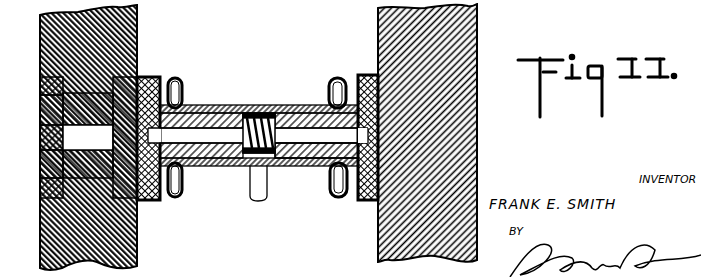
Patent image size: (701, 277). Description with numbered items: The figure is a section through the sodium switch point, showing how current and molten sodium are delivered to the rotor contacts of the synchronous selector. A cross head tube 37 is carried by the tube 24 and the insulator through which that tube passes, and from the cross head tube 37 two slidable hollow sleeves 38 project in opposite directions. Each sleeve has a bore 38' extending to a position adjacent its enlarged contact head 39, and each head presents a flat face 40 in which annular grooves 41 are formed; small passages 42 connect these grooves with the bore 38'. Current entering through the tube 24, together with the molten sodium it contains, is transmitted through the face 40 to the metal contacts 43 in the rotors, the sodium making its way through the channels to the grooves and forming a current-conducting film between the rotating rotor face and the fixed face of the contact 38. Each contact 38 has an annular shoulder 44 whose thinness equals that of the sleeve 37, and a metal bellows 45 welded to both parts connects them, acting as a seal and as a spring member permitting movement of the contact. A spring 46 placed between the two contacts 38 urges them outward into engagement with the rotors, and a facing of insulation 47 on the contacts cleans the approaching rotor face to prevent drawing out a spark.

The tube 24 is at (250, 181).
The cross head tube 37 is at (229, 105).
The slidable hollow sleeve 38 is at (258, 133).
The bore 38' is at (316, 164).
The enlarged contact head 39 is at (362, 75).
The flat face 40 is at (372, 201).
The annular groove 41 is at (374, 75).
The small passage 42 is at (360, 201).
The metal contact 43 is at (41, 170).
The annular shoulder 44 is at (333, 78).
The metal bellows 45 is at (337, 198).
The spring 46 is at (272, 133).
The facing of insulation 47 is at (147, 77).